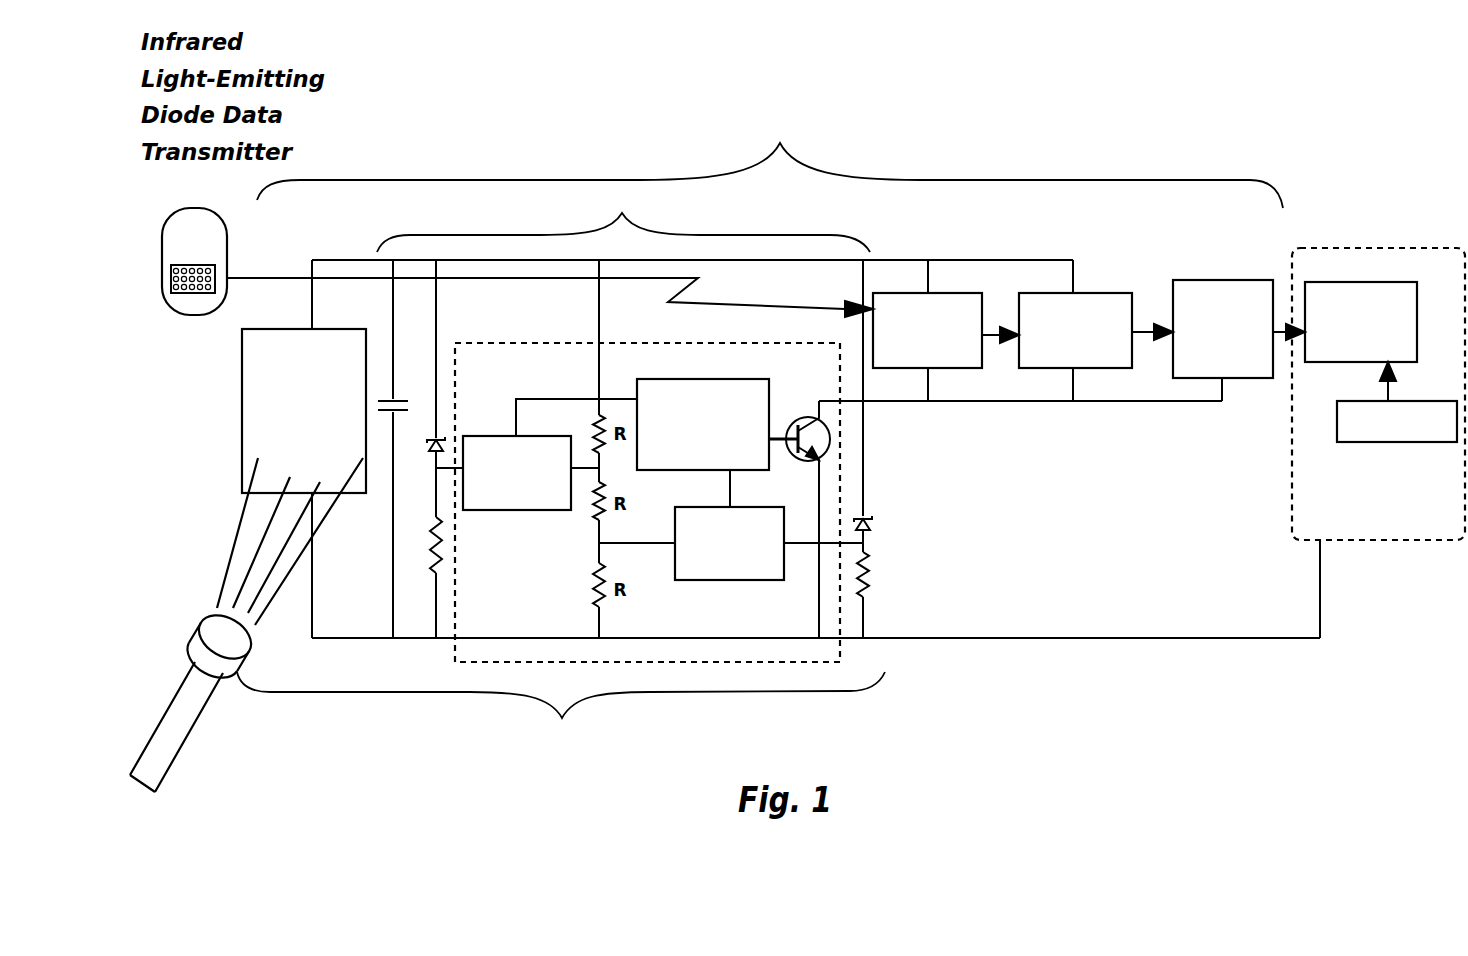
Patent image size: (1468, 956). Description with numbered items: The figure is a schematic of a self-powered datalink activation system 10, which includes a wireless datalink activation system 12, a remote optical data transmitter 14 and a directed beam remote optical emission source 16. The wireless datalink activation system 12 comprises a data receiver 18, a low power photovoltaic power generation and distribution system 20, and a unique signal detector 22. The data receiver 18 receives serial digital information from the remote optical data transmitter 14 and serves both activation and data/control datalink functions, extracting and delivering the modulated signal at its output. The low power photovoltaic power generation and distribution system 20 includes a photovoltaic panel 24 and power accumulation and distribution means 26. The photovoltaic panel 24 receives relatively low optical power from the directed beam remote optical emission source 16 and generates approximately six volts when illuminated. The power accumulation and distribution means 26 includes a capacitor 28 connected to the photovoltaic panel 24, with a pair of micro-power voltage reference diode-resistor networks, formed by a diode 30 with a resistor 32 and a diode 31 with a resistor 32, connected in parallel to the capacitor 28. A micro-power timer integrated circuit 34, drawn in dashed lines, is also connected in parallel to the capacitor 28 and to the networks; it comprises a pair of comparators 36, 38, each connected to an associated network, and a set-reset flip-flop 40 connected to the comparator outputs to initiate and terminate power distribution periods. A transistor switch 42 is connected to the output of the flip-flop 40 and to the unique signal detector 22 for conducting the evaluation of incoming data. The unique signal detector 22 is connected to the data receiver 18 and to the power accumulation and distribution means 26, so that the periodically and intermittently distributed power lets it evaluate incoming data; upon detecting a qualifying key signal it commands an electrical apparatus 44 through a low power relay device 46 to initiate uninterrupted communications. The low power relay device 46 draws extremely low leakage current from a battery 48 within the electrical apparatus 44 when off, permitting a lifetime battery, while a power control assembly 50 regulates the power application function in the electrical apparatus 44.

The self-powered datalink activation system 10 is at (880, 95).
The wireless datalink activation system 12 is at (770, 162).
The remote optical data transmitter 14 is at (223, 213).
The directed beam remote optical emission source 16 is at (245, 652).
The data receiver 18 is at (908, 290).
The low power photovoltaic power generation and distribution system 20 is at (561, 709).
The unique signal detector 22 is at (1107, 290).
The photovoltaic panel 24 is at (242, 415).
The power accumulation and distribution means 26 is at (623, 220).
The capacitor 28 is at (400, 402).
The micro-power voltage reference diode 30 is at (428, 440).
The micro-power voltage reference diode 31 is at (875, 513).
The resistor 32 is at (435, 572).
The micro-power timer integrated circuit 34 is at (533, 343).
The comparator 36 is at (515, 510).
The comparator 38 is at (732, 582).
The set-reset flip-flop 40 is at (700, 378).
The transistor switch 42 is at (810, 415).
The electrical apparatus 44 is at (1363, 247).
The low power relay device 46 is at (1220, 280).
The battery 48 is at (1418, 397).
The power control assembly 50 is at (1418, 318).